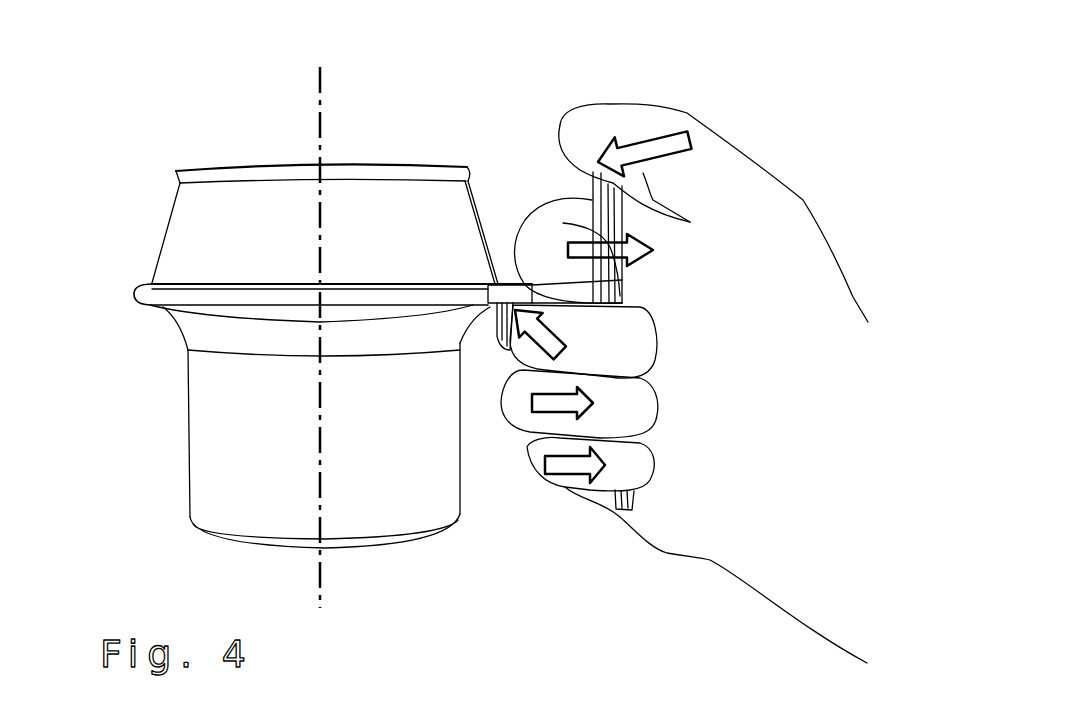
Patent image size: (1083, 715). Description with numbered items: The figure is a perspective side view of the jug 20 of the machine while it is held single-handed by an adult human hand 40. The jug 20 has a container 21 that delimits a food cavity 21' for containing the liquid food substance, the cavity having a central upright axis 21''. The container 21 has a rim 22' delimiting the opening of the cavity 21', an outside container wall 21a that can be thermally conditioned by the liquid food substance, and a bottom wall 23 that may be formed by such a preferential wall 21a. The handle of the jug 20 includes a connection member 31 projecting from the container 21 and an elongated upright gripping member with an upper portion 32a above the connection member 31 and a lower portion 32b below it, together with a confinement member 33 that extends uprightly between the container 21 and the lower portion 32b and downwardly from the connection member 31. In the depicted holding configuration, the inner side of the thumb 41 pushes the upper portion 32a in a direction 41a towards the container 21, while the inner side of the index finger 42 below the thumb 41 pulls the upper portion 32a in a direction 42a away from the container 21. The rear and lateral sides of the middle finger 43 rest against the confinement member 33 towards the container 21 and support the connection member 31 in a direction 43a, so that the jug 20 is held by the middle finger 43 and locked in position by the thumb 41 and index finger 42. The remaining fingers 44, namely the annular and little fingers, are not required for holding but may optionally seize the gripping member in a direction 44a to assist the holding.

The jug 20 is at (110, 155).
The container 21 is at (299, 325).
The food cavity 21' is at (325, 180).
The central upright axis 21'' is at (283, 305).
The outside container wall 21a is at (255, 410).
The rim 22' is at (323, 132).
The bottom wall 23 is at (390, 573).
The connection member 31 is at (513, 292).
The upper portion of gripping member 32a is at (598, 192).
The lower portion of gripping member 32b is at (630, 508).
The confinement member 33 is at (500, 323).
The hand 40 is at (828, 297).
The thumb 41 is at (628, 128).
The thumb pushing direction 41a is at (680, 143).
The index finger 42 is at (583, 277).
The index finger pulling direction 42a is at (627, 252).
The middle finger 43 is at (628, 352).
The middle finger supporting direction 43a is at (560, 343).
The remaining fingers 44 is at (607, 410).
The remaining fingers holding direction 44a is at (553, 403).